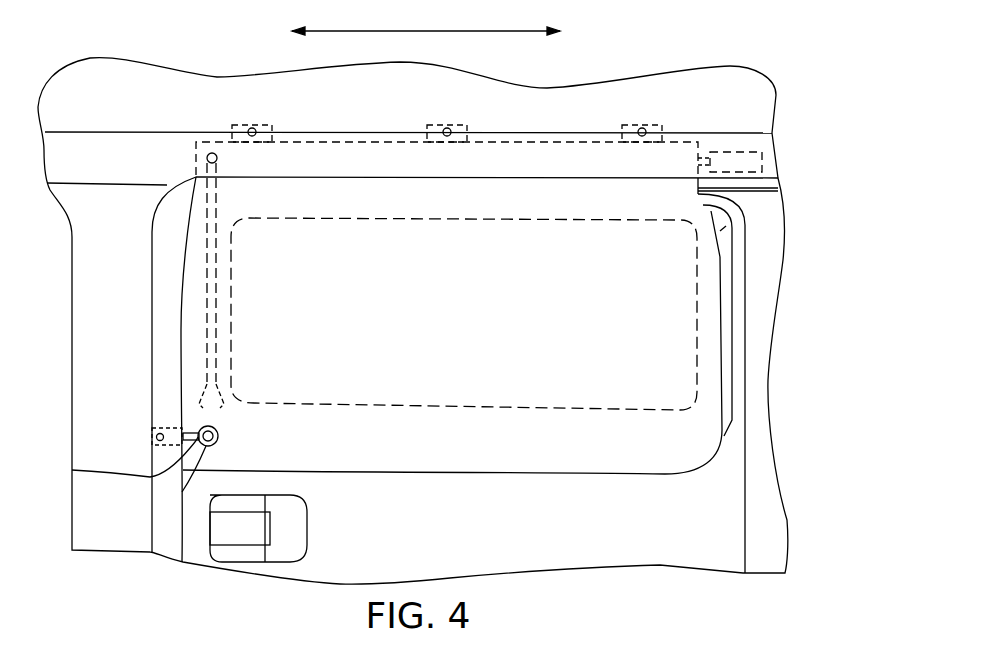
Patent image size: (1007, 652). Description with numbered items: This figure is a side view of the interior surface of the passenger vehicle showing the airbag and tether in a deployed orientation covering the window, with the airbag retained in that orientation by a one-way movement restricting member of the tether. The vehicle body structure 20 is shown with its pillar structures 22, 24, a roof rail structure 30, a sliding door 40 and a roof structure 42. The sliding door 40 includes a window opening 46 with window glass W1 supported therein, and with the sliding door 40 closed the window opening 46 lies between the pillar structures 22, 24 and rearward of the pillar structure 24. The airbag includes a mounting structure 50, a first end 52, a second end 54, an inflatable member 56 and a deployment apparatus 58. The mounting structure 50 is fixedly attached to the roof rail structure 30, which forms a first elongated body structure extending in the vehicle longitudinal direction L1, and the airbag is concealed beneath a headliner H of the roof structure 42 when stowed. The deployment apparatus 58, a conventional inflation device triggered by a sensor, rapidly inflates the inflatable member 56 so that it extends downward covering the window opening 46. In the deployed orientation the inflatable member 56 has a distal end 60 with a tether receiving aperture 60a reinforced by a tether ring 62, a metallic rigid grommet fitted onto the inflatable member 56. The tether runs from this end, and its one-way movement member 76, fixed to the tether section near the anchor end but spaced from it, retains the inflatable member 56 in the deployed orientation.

The body structure 20 is at (730, 39).
The pillar structure 22 is at (113, 323).
The pillar structure 24 is at (757, 337).
The roof rail structure 30 is at (132, 150).
The sliding door 40 is at (543, 527).
The roof structure 42 is at (670, 100).
The window opening 46 is at (388, 403).
The mounting structure 50 is at (252, 128).
The first end 52 is at (194, 157).
The second end 54 is at (698, 146).
The inflatable member 56 is at (438, 442).
The deployment apparatus 58 is at (758, 186).
The distal end 60 is at (182, 490).
The tether receiving aperture 60a is at (218, 443).
The tether ring 62 is at (219, 432).
The one-way movement member 76 is at (194, 399).
The headliner H is at (75, 158).
The vehicle longitudinal direction L1 is at (493, 32).
The window glass W1 is at (597, 360).